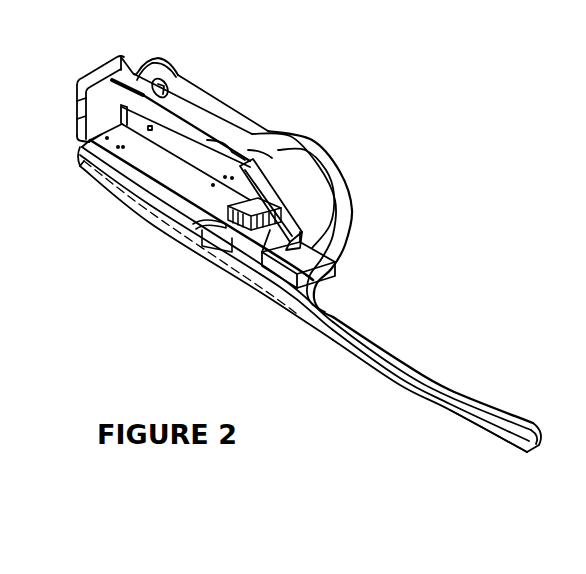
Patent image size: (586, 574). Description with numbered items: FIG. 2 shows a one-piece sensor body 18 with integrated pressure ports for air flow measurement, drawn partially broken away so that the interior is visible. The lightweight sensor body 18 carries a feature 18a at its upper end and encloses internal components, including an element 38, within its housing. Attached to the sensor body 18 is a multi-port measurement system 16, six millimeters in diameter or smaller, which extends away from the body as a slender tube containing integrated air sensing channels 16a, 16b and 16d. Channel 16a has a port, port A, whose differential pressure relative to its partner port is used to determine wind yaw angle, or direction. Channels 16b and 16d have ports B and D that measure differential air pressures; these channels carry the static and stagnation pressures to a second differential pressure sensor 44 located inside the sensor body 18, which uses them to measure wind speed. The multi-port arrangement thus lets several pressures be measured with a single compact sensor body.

The multi-port measurement system 16 is at (372, 339).
The integrated air sensing channel 16a is at (318, 243).
The integrated air sensing channel 16b is at (510, 438).
The integrated air sensing channel 16d is at (483, 438).
The sensor body 18 is at (88, 72).
The mounting lug 18a is at (171, 93).
The plunger 38 is at (297, 208).
The second differential pressure sensor 44 is at (197, 246).